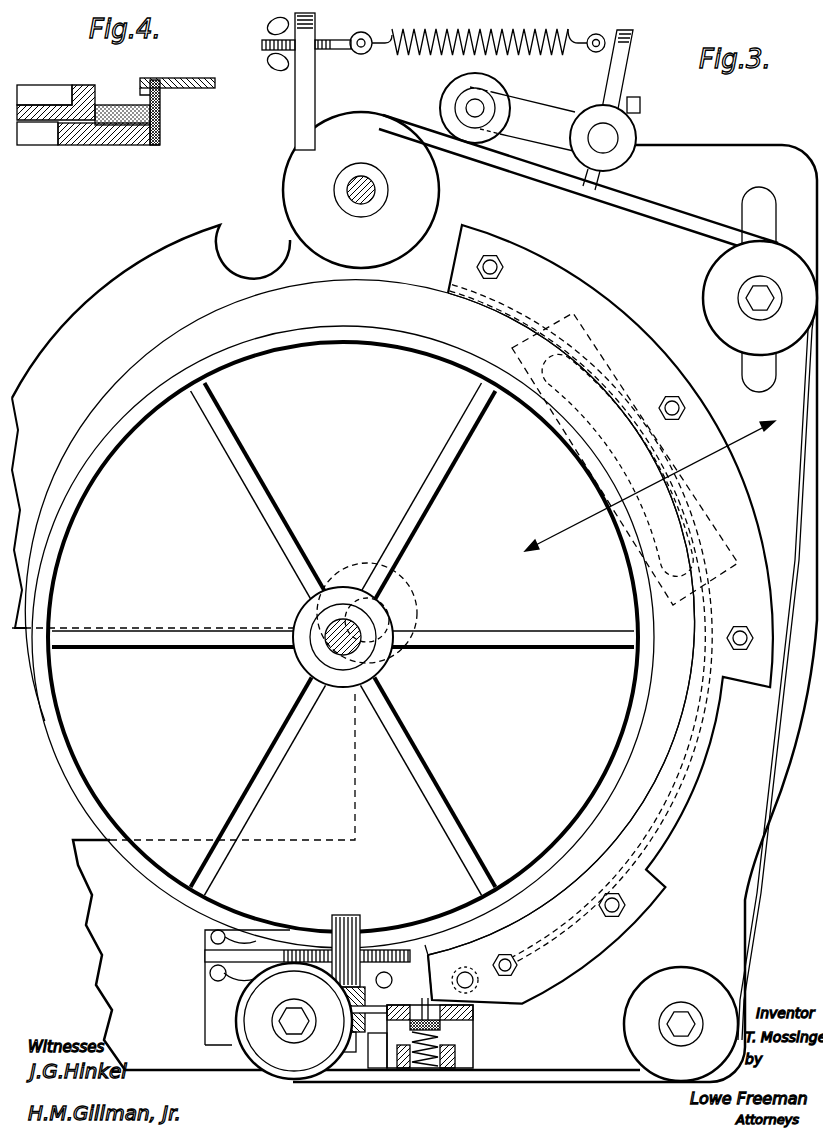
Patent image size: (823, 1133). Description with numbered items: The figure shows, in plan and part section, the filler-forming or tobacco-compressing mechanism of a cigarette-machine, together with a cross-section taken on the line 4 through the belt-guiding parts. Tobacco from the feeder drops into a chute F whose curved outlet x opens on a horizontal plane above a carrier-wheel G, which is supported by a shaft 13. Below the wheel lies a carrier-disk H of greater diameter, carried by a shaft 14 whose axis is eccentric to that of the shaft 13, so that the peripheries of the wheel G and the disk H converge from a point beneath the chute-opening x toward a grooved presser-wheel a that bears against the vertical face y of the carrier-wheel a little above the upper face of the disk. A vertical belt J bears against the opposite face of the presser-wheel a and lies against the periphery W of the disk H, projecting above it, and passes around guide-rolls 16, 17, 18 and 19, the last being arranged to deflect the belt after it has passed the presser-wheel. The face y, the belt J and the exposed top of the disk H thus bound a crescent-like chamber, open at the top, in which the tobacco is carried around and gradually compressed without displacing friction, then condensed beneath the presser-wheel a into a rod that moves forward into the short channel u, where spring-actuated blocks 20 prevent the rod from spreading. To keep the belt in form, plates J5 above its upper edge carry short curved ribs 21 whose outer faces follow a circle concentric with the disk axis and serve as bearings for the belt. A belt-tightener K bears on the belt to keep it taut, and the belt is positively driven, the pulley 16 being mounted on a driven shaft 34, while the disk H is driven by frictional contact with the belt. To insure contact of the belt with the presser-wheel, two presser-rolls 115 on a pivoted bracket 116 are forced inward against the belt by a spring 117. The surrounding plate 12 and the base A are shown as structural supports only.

In FIG. 3, the plate 12 is at (78, 428).
In FIG. 3, the shaft 13 is at (335, 644).
In FIG. 3, the shaft 14 is at (388, 622).
In FIG. 3, the guide-roll 16 is at (361, 190).
In FIG. 3, the guide-roll 17 is at (760, 289).
In FIG. 3, the guide-roll 18 is at (681, 1024).
In FIG. 3, the guide-roll 19 is at (294, 1021).
In FIG. 3, the spring-actuated blocks 20 is at (243, 936).
In FIG. 4, the curved ribs 21 is at (138, 80).
In FIG. 3, the curved ribs 21 is at (702, 642).
In FIG. 3, the shaft 34 is at (376, 196).
In FIG. 3, the presser-rolls 115 is at (392, 980).
In FIG. 3, the pivoted bracket 116 is at (430, 958).
In FIG. 3, the spring 117 is at (450, 1041).
In FIG. 3, the base plate A is at (326, 849).
In FIG. 3, the chute F is at (512, 348).
In FIG. 4, the carrier-wheel G is at (80, 88).
In FIG. 3, the carrier-wheel G is at (680, 585).
In FIG. 4, the carrier-disk H is at (76, 148).
In FIG. 3, the carrier-disk H is at (200, 334).
In FIG. 4, the vertical belt J is at (162, 117).
In FIG. 3, the vertical belt J is at (607, 196).
In FIG. 3, the plates J5 is at (622, 313).
In FIG. 3, the belt-tightener K is at (509, 112).
In FIG. 4, the periphery W is at (140, 148).
In FIG. 3, the grooved presser-wheel a is at (378, 948).
In FIG. 3, the short channel u is at (205, 956).
In FIG. 3, the curved outlet x is at (617, 465).
In FIG. 4, the vertical face y is at (97, 97).
In FIG. 3, the vertical face y is at (636, 772).
In FIG. 3, the section line 4 is at (653, 484).